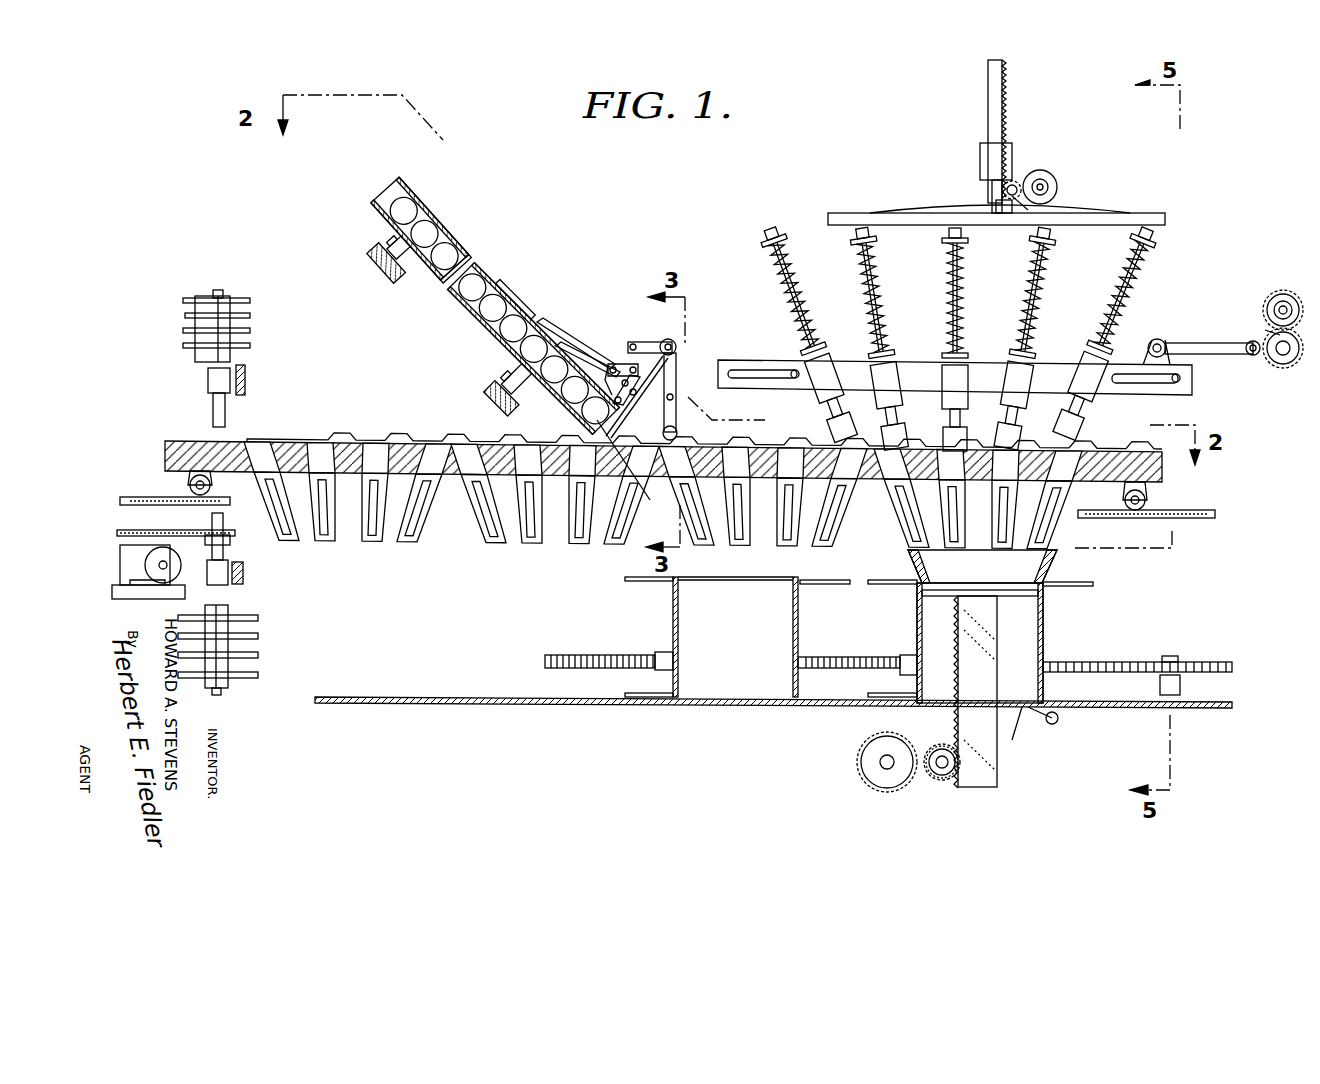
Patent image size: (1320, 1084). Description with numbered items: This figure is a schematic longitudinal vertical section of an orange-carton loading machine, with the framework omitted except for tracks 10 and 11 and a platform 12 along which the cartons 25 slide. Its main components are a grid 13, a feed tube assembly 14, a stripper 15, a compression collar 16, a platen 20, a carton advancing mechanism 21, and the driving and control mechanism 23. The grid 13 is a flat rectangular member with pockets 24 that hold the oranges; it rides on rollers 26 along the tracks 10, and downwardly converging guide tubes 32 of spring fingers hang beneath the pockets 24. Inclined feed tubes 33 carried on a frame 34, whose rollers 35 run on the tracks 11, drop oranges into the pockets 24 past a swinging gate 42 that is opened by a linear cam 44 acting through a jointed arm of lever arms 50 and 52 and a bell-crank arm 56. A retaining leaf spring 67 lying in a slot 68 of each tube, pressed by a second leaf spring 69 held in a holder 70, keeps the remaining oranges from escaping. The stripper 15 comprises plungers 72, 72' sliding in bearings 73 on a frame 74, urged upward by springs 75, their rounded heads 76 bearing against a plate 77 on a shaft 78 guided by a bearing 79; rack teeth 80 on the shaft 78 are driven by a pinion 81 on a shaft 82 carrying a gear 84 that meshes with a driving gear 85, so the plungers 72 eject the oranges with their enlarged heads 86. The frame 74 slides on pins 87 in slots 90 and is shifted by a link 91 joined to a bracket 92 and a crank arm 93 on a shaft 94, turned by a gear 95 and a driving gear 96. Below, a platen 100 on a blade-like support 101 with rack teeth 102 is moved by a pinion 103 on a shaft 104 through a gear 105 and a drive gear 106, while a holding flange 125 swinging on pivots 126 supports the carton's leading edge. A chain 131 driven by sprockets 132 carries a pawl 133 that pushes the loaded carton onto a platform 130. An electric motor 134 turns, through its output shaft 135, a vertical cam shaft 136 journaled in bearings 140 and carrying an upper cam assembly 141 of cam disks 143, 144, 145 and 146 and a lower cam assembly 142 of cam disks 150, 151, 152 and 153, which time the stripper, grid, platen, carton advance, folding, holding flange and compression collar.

The tracks 10 is at (140, 503).
The tracks 11 is at (368, 280).
The platform 12 is at (515, 703).
The grid 13 is at (663, 467).
The feed tube assembly 14 is at (504, 346).
The stripper 15 is at (970, 317).
The compression collar 16 is at (908, 562).
The platen 20 is at (981, 685).
The carton advancing mechanism 21 is at (1145, 655).
The driving and control mechanism 23 is at (221, 621).
The pockets 24 is at (940, 460).
The carton 25 is at (1055, 630).
The rollers 26 is at (210, 485).
The guide tubes 32 is at (490, 505).
The feed tubes 33 is at (455, 242).
The frame 34 is at (500, 335).
The rollers 35 is at (400, 280).
The gate 42 is at (634, 469).
The linear cam 44 is at (762, 442).
The lever arm 50 is at (690, 411).
The upper lever arm 52 is at (676, 373).
The bell-crank arm 56 is at (650, 342).
The retaining leaf spring 67 is at (560, 352).
The open slot 68 is at (535, 335).
The leaf spring 69 is at (590, 362).
The holder 70 is at (620, 350).
The spring 72' is at (808, 333).
The plungers 72 is at (1004, 337).
The bearing 73 is at (958, 377).
The frame 74 is at (976, 371).
The spring 75 is at (866, 305).
The rounded heads 76 is at (770, 228).
The horizontal plate 77 is at (870, 213).
The shaft 78 is at (992, 187).
The bearing 79 is at (980, 160).
The rack teeth 80 is at (1003, 124).
The pinion 81 is at (1017, 184).
The shaft 82 is at (1004, 213).
The gear 84 is at (1015, 200).
The driving gear 85 is at (1057, 184).
The enlarged heads 86 is at (900, 432).
The pins 87 is at (795, 382).
The horizontal slots 90 is at (760, 375).
The link 91 is at (1205, 343).
The bracket 92 is at (1160, 340).
The crank arm 93 is at (1254, 357).
The shaft 94 is at (1270, 340).
The gear 95 is at (1290, 368).
The driving gear 96 is at (1283, 290).
The platen 100 is at (1020, 596).
The blade-like support 101 is at (975, 628).
The rack teeth 102 is at (958, 662).
The pinion 103 is at (945, 748).
The shaft 104 is at (943, 770).
The gear 105 is at (930, 785).
The drive gear 106 is at (878, 778).
The holding flange 125 is at (1017, 712).
The pivots 126 is at (1058, 722).
The platform 130 is at (1118, 710).
The chain 131 is at (842, 658).
The sprockets 132 is at (1180, 668).
The carton-engaging pawl 133 is at (665, 652).
The electric motor 134 is at (148, 565).
The output drive shaft 135 is at (118, 535).
The vertical cam shaft 136 is at (225, 411).
The bearings 140 is at (208, 382).
The upper cam assembly 141 is at (205, 320).
The lower cam assembly 142 is at (272, 591).
The cam disk 143 is at (248, 300).
The cam disk 144 is at (250, 315).
The cam disk 145 is at (252, 331).
The cam disk 146 is at (250, 347).
The cam disk 150 is at (250, 617).
The cam disk 151 is at (255, 636).
The cam disk 152 is at (255, 656).
The cam disk 153 is at (245, 678).